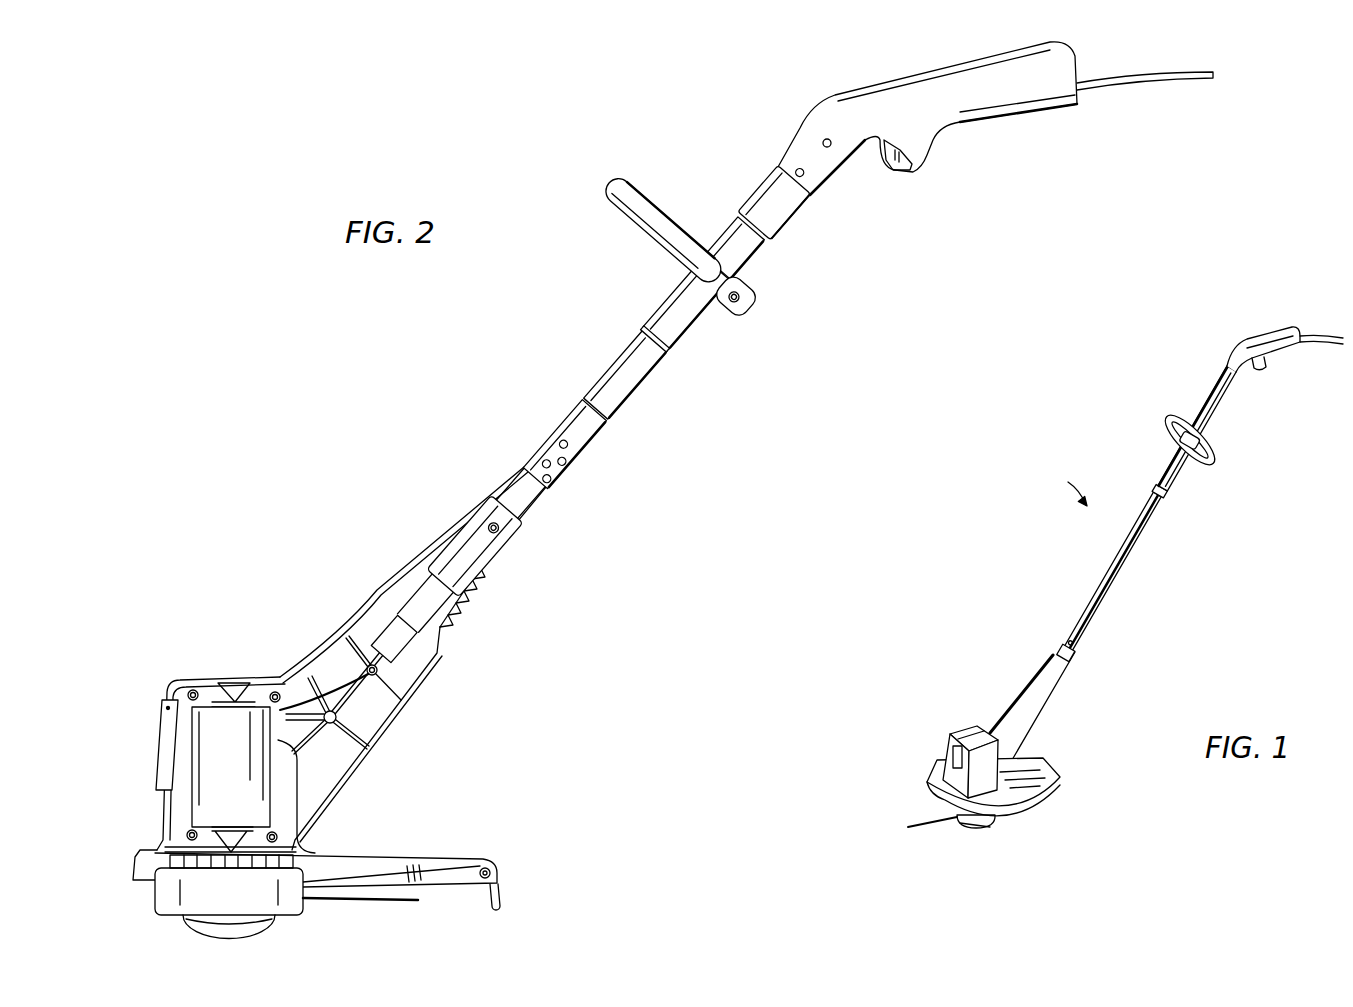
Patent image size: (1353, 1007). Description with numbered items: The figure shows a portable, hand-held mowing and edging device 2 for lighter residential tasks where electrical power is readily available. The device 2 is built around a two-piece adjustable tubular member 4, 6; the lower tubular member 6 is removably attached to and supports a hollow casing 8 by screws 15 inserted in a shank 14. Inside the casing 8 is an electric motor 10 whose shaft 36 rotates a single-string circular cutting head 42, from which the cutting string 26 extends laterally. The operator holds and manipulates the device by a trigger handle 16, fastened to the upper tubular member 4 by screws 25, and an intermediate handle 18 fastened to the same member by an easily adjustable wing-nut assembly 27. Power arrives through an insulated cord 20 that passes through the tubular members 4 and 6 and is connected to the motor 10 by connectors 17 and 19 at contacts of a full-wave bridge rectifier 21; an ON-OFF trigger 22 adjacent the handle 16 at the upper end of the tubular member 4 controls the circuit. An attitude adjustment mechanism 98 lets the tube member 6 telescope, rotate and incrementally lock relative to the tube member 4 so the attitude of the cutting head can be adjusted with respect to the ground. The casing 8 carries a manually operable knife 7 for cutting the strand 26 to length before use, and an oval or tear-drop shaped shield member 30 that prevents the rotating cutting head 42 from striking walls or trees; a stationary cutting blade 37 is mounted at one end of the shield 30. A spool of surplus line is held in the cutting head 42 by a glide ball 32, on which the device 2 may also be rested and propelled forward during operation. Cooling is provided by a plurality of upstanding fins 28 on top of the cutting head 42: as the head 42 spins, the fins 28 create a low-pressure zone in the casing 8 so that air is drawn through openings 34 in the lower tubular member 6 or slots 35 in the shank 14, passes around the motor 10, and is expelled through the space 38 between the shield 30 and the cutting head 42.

In FIG. 1, the mowing and edging device 2 is at (1066, 482).
In FIG. 2, the tubular member 4 is at (722, 230).
In FIG. 1, the tubular member 4 is at (1210, 398).
In FIG. 2, the tubular member 6 is at (627, 403).
In FIG. 1, the tubular member 6 is at (1130, 562).
In FIG. 2, the knife 7 is at (160, 727).
In FIG. 1, the knife 7 is at (947, 760).
In FIG. 2, the casing 8 is at (202, 680).
In FIG. 1, the casing 8 is at (978, 733).
In FIG. 2, the electric motor 10 is at (210, 767).
In FIG. 2, the shank 14 is at (445, 535).
In FIG. 1, the shank 14 is at (1050, 703).
In FIG. 2, the screws 15 is at (512, 542).
In FIG. 2, the trigger handle 16 is at (1001, 113).
In FIG. 1, the trigger handle 16 is at (1272, 335).
In FIG. 2, the connector 17 is at (427, 662).
In FIG. 2, the intermediate handle 18 is at (603, 210).
In FIG. 1, the intermediate handle 18 is at (1218, 461).
In FIG. 2, the connector 19 is at (377, 677).
In FIG. 2, the cord 20 is at (1163, 78).
In FIG. 1, the cord 20 is at (1327, 338).
In FIG. 2, the full-wave bridge rectifier 21 is at (387, 640).
In FIG. 2, the trigger 22 is at (902, 170).
In FIG. 1, the trigger 22 is at (1260, 368).
In FIG. 2, the screws 25 is at (798, 170).
In FIG. 2, the cutting string 26 is at (363, 902).
In FIG. 1, the cutting string 26 is at (923, 827).
In FIG. 2, the wing-nut assembly 27 is at (752, 306).
In FIG. 2, the fins 28 is at (320, 853).
In FIG. 2, the shield member 30 is at (440, 857).
In FIG. 1, the shield member 30 is at (1037, 773).
In FIG. 2, the glide ball 32 is at (257, 940).
In FIG. 1, the glide ball 32 is at (973, 829).
In FIG. 2, the openings 34 is at (567, 463).
In FIG. 1, the openings 34 is at (1080, 638).
In FIG. 2, the slots 35 is at (462, 617).
In FIG. 2, the shaft 36 is at (238, 840).
In FIG. 2, the stationary cutting blade 37 is at (500, 900).
In FIG. 2, the space 38 is at (150, 860).
In FIG. 2, the string cutting head 42 is at (157, 913).
In FIG. 1, the string cutting head 42 is at (997, 823).
In FIG. 2, the attitude adjustment mechanism 98 is at (647, 327).
In FIG. 1, the attitude adjustment mechanism 98 is at (1167, 500).